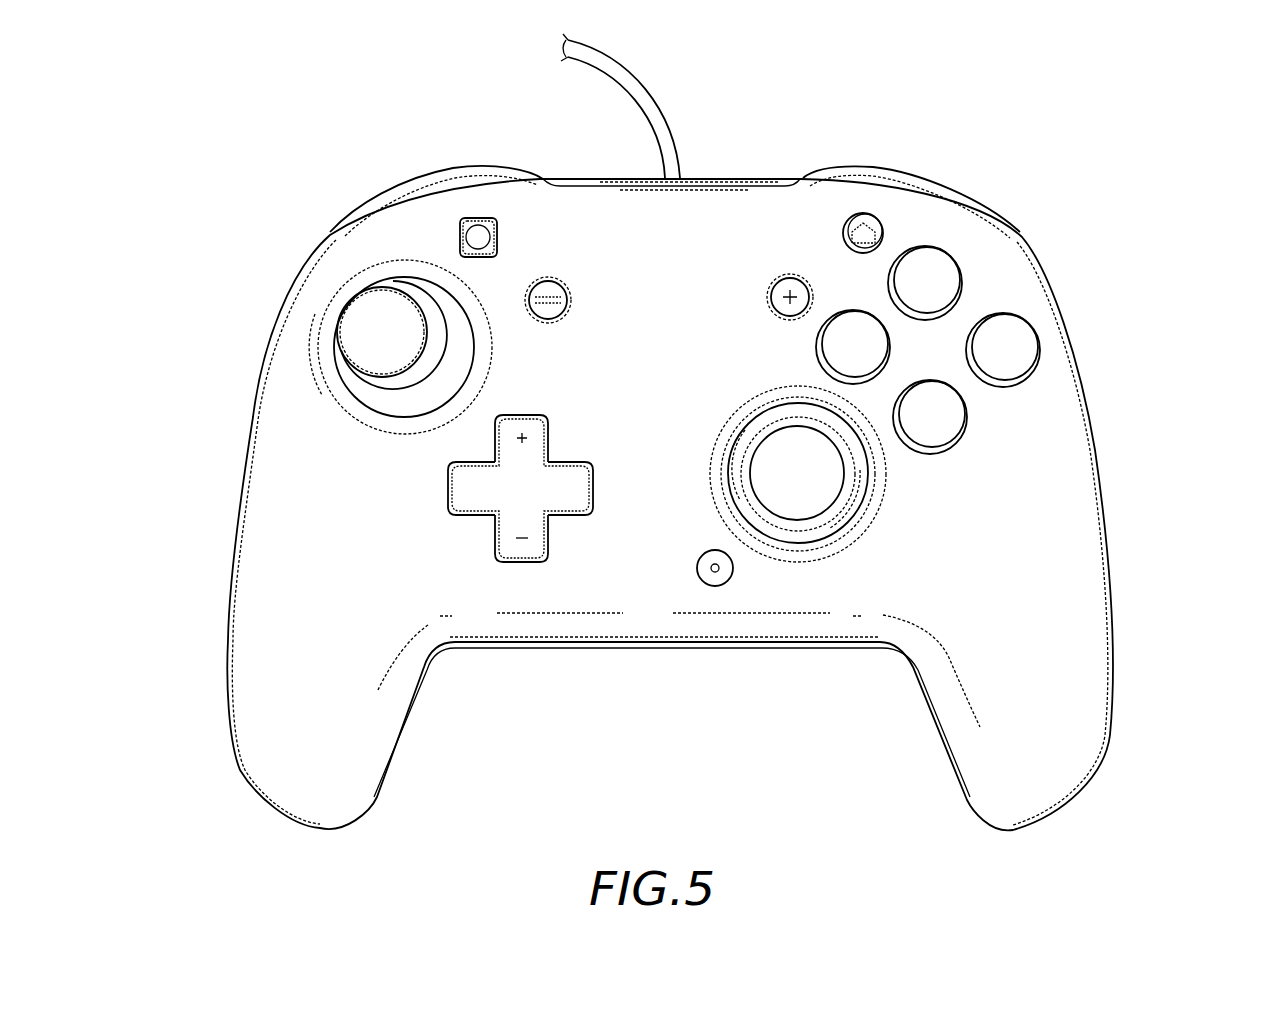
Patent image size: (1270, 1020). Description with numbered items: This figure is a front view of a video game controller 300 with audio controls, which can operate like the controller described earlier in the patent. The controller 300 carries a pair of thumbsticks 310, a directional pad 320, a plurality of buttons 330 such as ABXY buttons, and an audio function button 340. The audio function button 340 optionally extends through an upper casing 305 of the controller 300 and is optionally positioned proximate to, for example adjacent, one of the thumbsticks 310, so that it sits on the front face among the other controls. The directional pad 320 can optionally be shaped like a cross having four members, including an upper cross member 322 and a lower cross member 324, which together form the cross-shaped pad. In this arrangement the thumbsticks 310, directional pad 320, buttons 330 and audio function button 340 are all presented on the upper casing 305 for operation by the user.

The video game controller 300 is at (1142, 207).
The upper casing 305 is at (1055, 474).
The thumbsticks 310 is at (367, 310).
The directional pad 320 is at (548, 490).
The upper cross member 322 is at (508, 453).
The lower cross member 324 is at (490, 556).
The buttons 330 is at (1050, 325).
The audio function button 340 is at (725, 574).